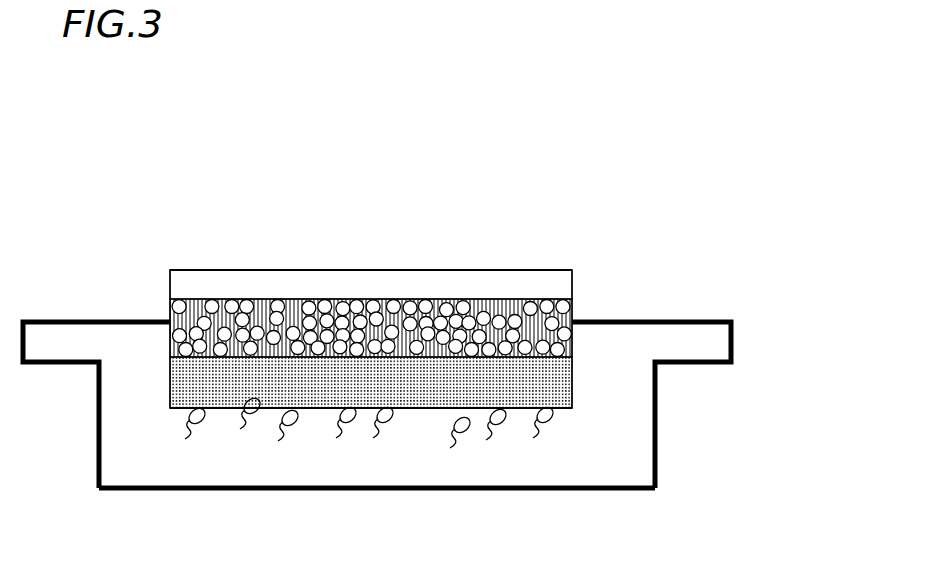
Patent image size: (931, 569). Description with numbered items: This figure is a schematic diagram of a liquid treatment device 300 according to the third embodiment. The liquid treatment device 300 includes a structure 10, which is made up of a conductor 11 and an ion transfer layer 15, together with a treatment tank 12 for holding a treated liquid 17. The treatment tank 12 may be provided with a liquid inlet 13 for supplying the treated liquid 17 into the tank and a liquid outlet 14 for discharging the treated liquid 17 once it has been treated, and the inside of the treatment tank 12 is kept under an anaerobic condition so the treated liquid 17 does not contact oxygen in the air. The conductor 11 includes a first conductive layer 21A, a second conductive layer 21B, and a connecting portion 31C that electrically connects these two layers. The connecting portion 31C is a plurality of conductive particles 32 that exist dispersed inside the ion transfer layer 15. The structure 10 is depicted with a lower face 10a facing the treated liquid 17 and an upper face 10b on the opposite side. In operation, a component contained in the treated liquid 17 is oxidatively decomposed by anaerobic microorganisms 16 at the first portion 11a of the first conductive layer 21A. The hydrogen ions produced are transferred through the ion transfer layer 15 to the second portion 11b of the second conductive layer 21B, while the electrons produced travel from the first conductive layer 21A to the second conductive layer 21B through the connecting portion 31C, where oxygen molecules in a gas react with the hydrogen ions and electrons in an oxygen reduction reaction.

The liquid treatment device 300 is at (672, 78).
The structure 10 is at (155, 268).
The bottom surface of substrate 10a is at (220, 410).
The top surface of substrate 10b is at (207, 268).
The conductor 11 is at (713, 115).
The first portion 11a is at (430, 410).
The second portion 11b is at (378, 270).
The treatment tank 12 is at (402, 382).
The liquid inlet 13 is at (33, 322).
The liquid outlet 14 is at (717, 322).
The ion transfer layer 15 is at (248, 307).
The anaerobic microorganisms 16 is at (297, 425).
The treated liquid 17 is at (613, 470).
The first conductive layer 21A is at (574, 378).
The second conductive layer 21B is at (403, 278).
The connecting portion 31C is at (380, 236).
The conductive particles 32 is at (483, 323).